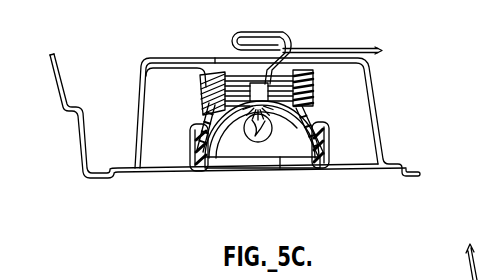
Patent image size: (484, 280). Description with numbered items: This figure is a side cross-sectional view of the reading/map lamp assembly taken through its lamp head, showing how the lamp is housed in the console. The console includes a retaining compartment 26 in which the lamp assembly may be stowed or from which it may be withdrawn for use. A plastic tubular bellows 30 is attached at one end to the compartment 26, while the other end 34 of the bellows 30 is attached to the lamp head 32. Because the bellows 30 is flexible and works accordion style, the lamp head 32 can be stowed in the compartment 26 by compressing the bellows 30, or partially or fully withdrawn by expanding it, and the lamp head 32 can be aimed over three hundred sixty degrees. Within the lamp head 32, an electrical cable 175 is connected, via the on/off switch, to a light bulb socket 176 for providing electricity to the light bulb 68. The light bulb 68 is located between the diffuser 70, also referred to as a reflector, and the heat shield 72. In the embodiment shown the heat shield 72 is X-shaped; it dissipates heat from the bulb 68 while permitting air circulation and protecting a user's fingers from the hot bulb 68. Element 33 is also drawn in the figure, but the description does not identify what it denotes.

The retaining compartment 26 is at (183, 68).
The electrical cable 175 is at (281, 32).
The light bulb socket 176 is at (263, 92).
The end of the bellows 34 is at (316, 81).
The plastic tubular bellows 30 is at (314, 100).
The clip 33 is at (322, 123).
The lamp head 32 is at (331, 149).
The light bulb 68 is at (245, 124).
The diffuser 70 is at (293, 143).
The heat shield 72 is at (276, 168).